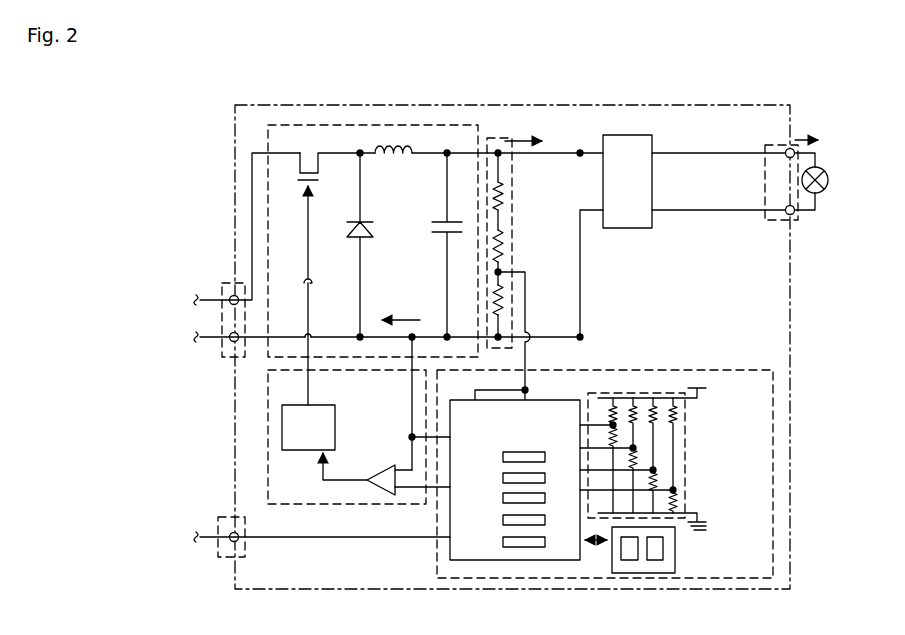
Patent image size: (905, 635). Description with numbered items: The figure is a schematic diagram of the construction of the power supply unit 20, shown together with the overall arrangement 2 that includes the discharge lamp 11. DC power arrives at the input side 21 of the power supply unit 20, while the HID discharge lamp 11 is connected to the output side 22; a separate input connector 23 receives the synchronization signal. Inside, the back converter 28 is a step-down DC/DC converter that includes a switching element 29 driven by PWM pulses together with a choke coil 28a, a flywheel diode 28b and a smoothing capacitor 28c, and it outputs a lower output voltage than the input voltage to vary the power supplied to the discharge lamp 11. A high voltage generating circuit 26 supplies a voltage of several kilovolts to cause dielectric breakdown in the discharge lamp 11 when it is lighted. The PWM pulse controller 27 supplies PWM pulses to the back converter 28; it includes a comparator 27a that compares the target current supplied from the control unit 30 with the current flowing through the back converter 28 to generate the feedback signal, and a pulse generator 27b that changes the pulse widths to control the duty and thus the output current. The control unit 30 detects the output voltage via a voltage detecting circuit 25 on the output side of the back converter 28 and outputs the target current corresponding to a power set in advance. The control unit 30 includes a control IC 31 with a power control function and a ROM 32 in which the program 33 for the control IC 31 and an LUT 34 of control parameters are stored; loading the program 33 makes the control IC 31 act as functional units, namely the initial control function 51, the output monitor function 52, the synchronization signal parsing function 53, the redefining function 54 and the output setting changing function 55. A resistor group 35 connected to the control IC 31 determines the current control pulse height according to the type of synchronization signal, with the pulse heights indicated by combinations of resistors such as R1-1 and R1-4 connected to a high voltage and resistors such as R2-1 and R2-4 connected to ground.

The lighting device 2 is at (812, 90).
The discharge lamp 11 is at (828, 180).
The power supply unit 20 is at (730, 112).
The input side 21 is at (228, 290).
The output side 22 is at (800, 218).
The input connector 23 is at (225, 518).
The voltage detecting circuit 25 is at (508, 222).
The high voltage generating circuit 26 is at (652, 140).
The PWM pulse controller 27 is at (308, 500).
The comparator 27a is at (375, 471).
The pulse generator 27b is at (338, 418).
The back converter 28 is at (478, 130).
The choke coil 28a is at (390, 160).
The flywheel diode 28b is at (374, 228).
The smoothing capacitor 28c is at (426, 235).
The switching element 29 is at (300, 183).
The control unit 30 is at (765, 520).
The control IC 31 is at (450, 550).
The ROM 32 is at (678, 562).
The program 33 is at (630, 559).
The LUT 34 is at (655, 559).
The resistor group 35 is at (690, 472).
The initial control function 51 is at (510, 452).
The output monitor function 52 is at (510, 478).
The synchronization signal parsing function 53 is at (548, 502).
The redefining function 54 is at (540, 527).
The output setting changing function 55 is at (518, 549).
The resistor R1-1 is at (610, 415).
The resistor R2-1 is at (607, 434).
The resistor R1-4 is at (680, 415).
The resistor R2-4 is at (683, 505).